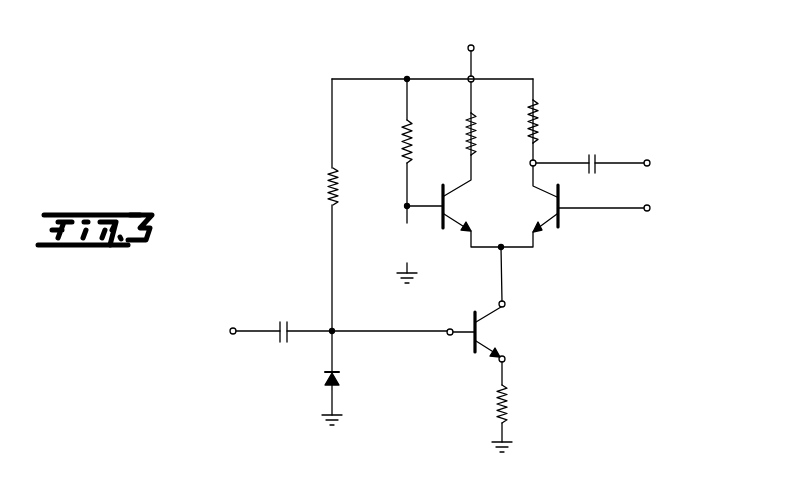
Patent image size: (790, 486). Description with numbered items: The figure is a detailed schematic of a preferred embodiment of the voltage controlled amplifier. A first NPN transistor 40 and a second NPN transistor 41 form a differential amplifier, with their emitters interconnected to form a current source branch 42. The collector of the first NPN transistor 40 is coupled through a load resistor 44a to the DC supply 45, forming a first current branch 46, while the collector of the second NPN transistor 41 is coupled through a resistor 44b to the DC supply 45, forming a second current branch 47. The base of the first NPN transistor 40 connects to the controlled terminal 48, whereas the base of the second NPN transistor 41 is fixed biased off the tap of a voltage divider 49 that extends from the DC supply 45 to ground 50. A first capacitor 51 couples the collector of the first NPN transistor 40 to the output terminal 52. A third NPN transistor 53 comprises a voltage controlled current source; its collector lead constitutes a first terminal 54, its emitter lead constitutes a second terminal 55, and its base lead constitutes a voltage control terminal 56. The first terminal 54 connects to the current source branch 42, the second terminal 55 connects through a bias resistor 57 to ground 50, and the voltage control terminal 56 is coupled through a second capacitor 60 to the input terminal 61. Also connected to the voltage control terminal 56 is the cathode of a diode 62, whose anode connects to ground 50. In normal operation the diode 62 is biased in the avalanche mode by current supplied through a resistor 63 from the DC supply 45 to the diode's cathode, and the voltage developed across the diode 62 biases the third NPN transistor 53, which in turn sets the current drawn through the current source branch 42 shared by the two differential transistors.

The DC supply 45 is at (475, 48).
The load resistor 44a is at (530, 118).
The resistor 44b is at (467, 129).
The first current branch 46 is at (543, 98).
The second current branch 47 is at (480, 112).
The resistor 63 is at (330, 170).
The voltage divider 49 is at (402, 203).
The second NPN transistor 41 is at (452, 212).
The first NPN transistor 40 is at (549, 205).
The first capacitor 51 is at (598, 160).
The output terminal 52 is at (649, 160).
The controlled terminal 48 is at (646, 205).
The current source branch 42 is at (508, 252).
The first terminal 54 is at (494, 310).
The third NPN transistor 53 is at (505, 332).
The voltage control terminal 56 is at (447, 336).
The second terminal 55 is at (506, 359).
The bias resistor 57 is at (506, 391).
The second capacitor 60 is at (283, 321).
The input terminal 61 is at (240, 322).
The diode 62 is at (338, 380).
The ground 50 is at (400, 276).